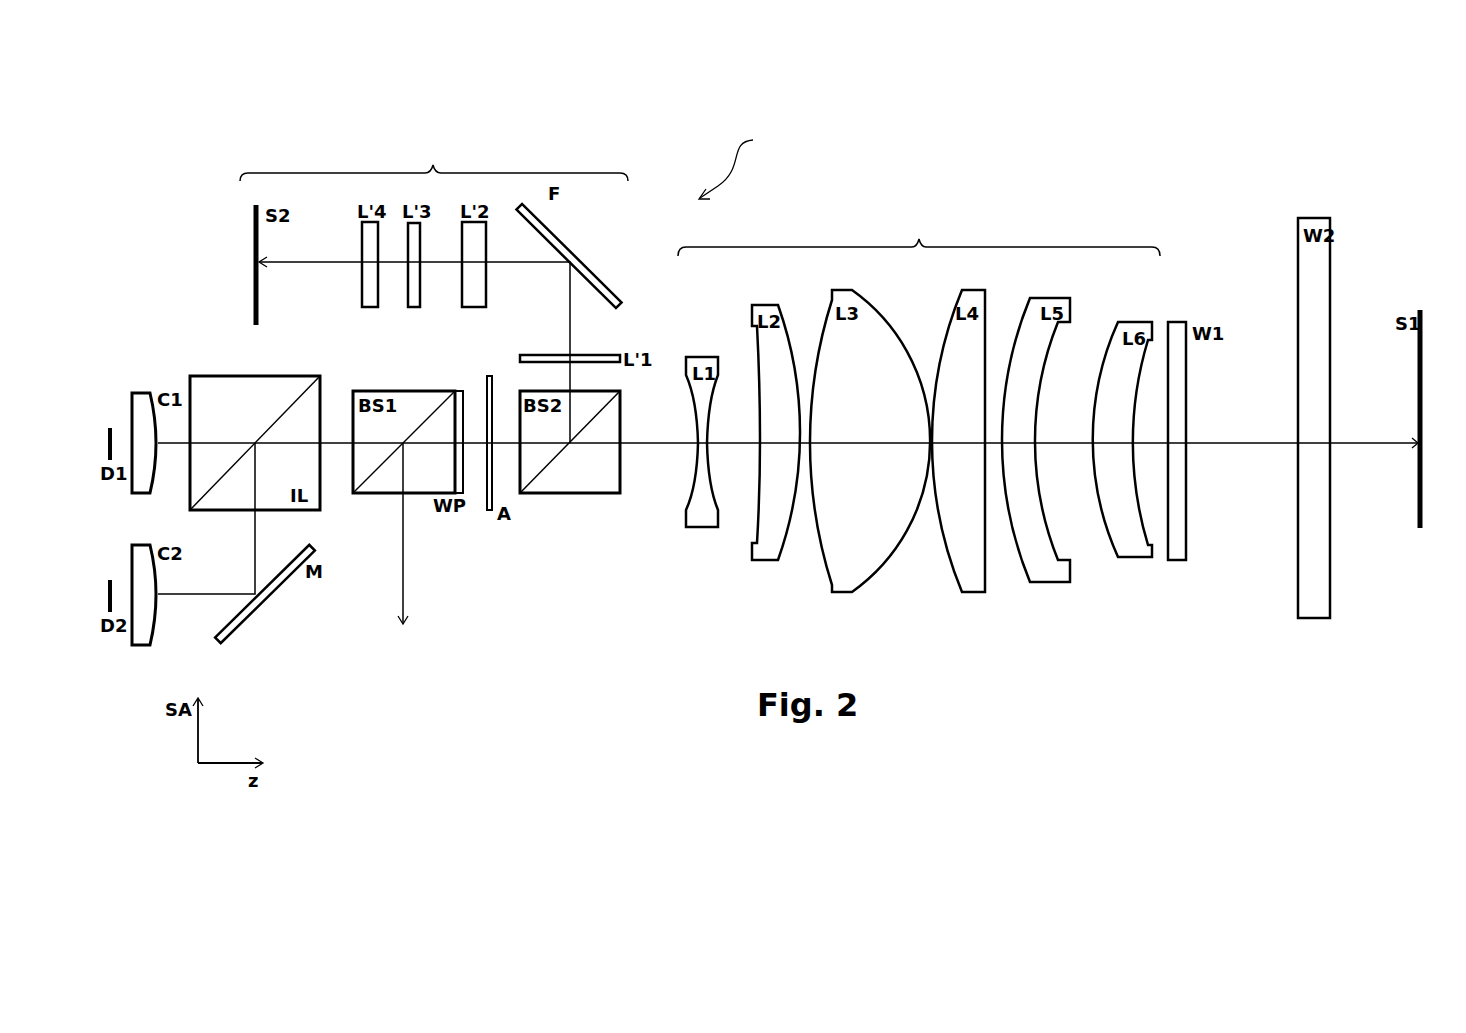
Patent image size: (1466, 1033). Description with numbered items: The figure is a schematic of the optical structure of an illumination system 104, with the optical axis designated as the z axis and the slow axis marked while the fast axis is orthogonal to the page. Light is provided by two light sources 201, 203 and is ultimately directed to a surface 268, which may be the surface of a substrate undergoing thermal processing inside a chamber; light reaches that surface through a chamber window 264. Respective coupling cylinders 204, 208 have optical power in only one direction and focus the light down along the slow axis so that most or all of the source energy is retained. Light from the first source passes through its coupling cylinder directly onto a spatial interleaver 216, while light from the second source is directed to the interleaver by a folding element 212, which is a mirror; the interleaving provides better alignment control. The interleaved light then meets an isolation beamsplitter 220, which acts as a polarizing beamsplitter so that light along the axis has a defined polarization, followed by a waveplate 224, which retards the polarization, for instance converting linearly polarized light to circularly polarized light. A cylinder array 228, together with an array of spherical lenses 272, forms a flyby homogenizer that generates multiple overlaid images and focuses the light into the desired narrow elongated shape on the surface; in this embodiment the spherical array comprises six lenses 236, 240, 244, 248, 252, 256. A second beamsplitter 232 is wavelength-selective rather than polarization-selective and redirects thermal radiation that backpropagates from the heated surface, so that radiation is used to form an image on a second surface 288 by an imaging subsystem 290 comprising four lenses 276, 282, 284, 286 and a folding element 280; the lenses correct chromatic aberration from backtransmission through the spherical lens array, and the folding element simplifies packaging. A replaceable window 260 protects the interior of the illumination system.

The illumination system 104 is at (747, 163).
The light source 201 is at (125, 412).
The light source 203 is at (125, 564).
The coupling cylinder 204 is at (150, 495).
The coupling cylinder 208 is at (150, 647).
The folding element 212 is at (285, 582).
The spatial interleaver 216 is at (242, 376).
The isolation beamsplitter 220 is at (386, 390).
The waveplate 224 is at (464, 414).
The cylinder array 228 is at (486, 502).
The second beamsplitter 232 is at (552, 495).
The lens 236 is at (690, 528).
The lens 240 is at (768, 561).
The lens 244 is at (852, 594).
The lens 248 is at (978, 594).
The lens 252 is at (1050, 584).
The lens 256 is at (1142, 559).
The replaceable window 260 is at (1187, 535).
The chamber window 264 is at (1331, 290).
The surface 268 is at (1418, 516).
The array of spherical lenses 272 is at (919, 237).
The lens 276 is at (535, 355).
The folding element 280 is at (562, 236).
The lens 282 is at (461, 292).
The lens 284 is at (407, 292).
The lens 286 is at (361, 292).
The second surface 288 is at (253, 310).
The imaging subsystem 290 is at (434, 163).